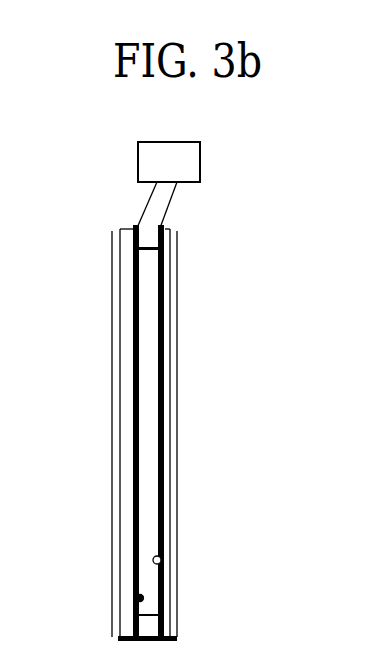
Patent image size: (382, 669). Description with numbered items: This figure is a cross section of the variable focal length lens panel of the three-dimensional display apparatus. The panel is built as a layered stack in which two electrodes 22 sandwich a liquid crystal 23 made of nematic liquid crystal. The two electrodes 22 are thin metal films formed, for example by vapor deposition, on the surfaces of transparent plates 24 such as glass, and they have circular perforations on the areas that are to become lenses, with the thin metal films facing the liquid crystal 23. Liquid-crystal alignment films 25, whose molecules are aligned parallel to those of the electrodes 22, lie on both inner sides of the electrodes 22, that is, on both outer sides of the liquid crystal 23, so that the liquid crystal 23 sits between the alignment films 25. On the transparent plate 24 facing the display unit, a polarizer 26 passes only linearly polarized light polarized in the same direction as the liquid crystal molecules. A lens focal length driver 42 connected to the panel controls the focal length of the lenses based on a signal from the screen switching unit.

The lens focal length driver 42 is at (138, 165).
The liquid crystal 23 is at (155, 308).
The polarizer 26 is at (113, 328).
The transparent plates 24 is at (125, 433).
The electrodes 22 is at (133, 567).
The liquid-crystal alignment films 25 is at (162, 553).